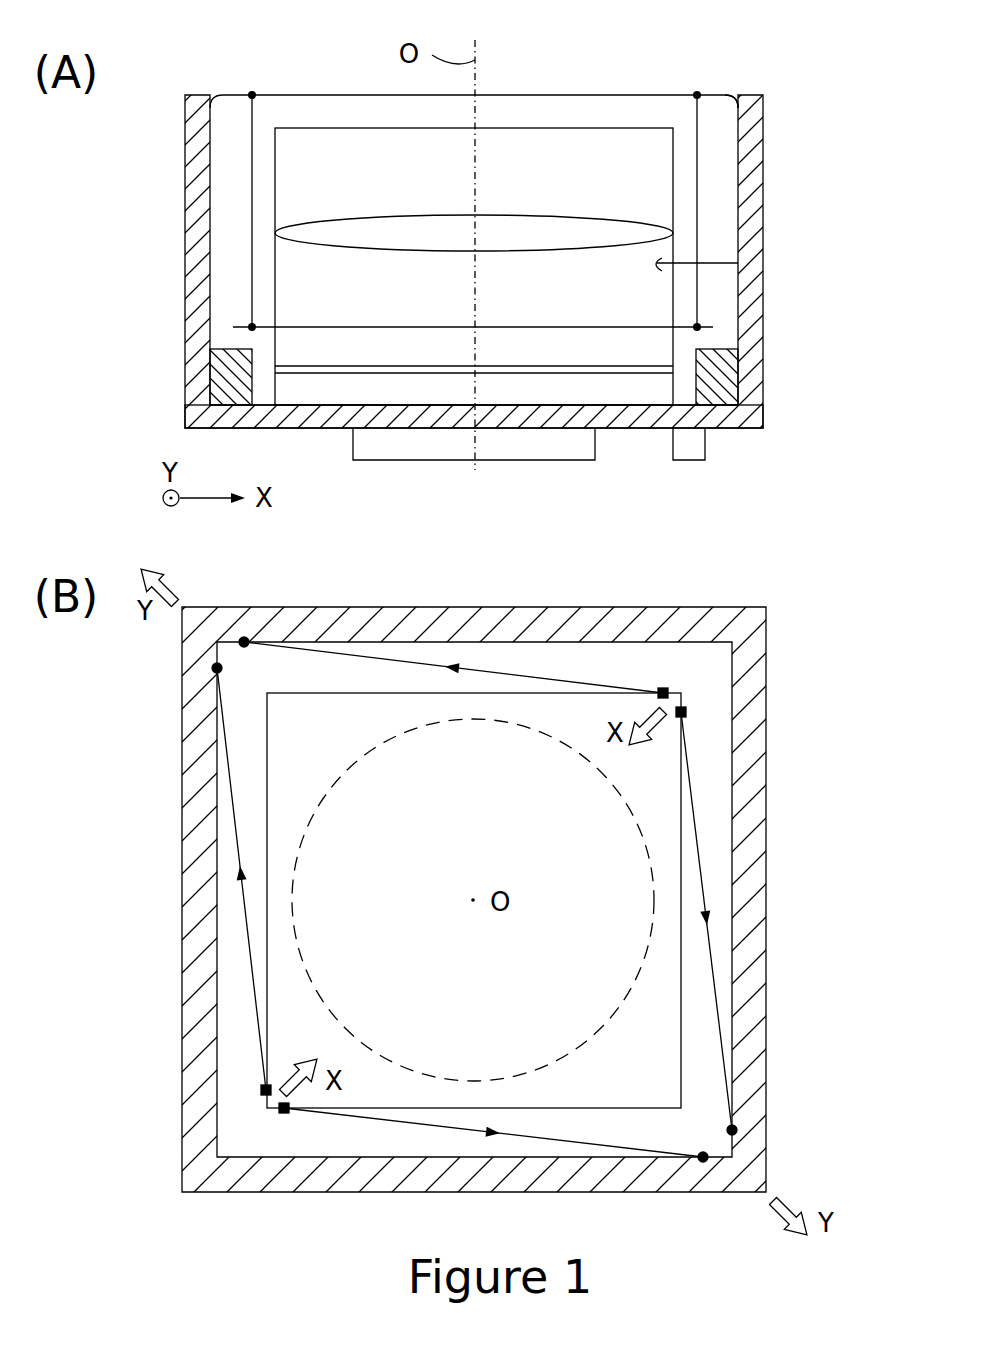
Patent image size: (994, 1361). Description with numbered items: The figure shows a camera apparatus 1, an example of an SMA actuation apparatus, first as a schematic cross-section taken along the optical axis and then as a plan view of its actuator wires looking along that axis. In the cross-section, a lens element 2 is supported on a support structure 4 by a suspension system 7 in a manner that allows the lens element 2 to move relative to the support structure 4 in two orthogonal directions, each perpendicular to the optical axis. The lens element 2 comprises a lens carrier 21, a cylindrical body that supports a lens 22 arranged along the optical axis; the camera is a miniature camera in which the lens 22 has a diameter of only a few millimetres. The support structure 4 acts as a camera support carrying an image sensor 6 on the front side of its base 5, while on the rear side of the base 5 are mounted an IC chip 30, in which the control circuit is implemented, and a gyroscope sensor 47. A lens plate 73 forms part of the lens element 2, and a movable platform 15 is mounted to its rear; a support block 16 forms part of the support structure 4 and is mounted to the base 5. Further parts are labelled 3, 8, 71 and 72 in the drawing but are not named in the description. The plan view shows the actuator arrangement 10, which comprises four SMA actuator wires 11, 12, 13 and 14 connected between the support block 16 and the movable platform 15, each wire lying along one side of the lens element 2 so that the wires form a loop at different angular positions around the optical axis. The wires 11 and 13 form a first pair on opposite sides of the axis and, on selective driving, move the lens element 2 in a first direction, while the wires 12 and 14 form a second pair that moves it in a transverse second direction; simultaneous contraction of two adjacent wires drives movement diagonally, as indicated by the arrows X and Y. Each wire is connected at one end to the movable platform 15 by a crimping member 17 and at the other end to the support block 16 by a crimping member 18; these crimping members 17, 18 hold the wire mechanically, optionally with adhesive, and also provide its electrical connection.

In FIG. 1A, the camera apparatus 1 is at (332, 72).
In FIG. 1A, the lens element 2 is at (615, 155).
In FIG. 1B, the lens element 2 is at (655, 880).
In FIG. 1B, the lens 3 is at (582, 710).
In FIG. 1A, the support structure 4 is at (745, 178).
In FIG. 1B, the support structure 4 is at (745, 762).
In FIG. 1A, the base 5 is at (717, 415).
In FIG. 1A, the image sensor 6 is at (640, 395).
In FIG. 1A, the suspension system 7 is at (738, 263).
In FIG. 1A, the flexible support member 8 is at (249, 325).
In FIG. 1B, the actuator arrangement 10 is at (146, 836).
In FIG. 1B, the SMA actuator wire 11 is at (508, 672).
In FIG. 1B, the SMA actuator wire 12 is at (713, 965).
In FIG. 1B, the SMA actuator wire 13 is at (535, 1140).
In FIG. 1B, the SMA actuator wire 14 is at (250, 946).
In FIG. 1A, the movable platform 15 is at (663, 340).
In FIG. 1B, the movable platform 15 is at (660, 825).
In FIG. 1A, the support block 16 is at (716, 380).
In FIG. 1B, the crimping member 17 is at (663, 690).
In FIG. 1B, the crimping member 18 is at (244, 640).
In FIG. 1A, the lens carrier 21 is at (673, 205).
In FIG. 1A, the lens 22 is at (540, 235).
In FIG. 1A, the IC chip 30 is at (542, 447).
In FIG. 1A, the gyroscope sensor 47 is at (685, 447).
In FIG. 1A, the cover 71 is at (700, 115).
In FIG. 1A, the cover corner portion 72 is at (716, 96).
In FIG. 1A, the lens plate 73 is at (700, 325).